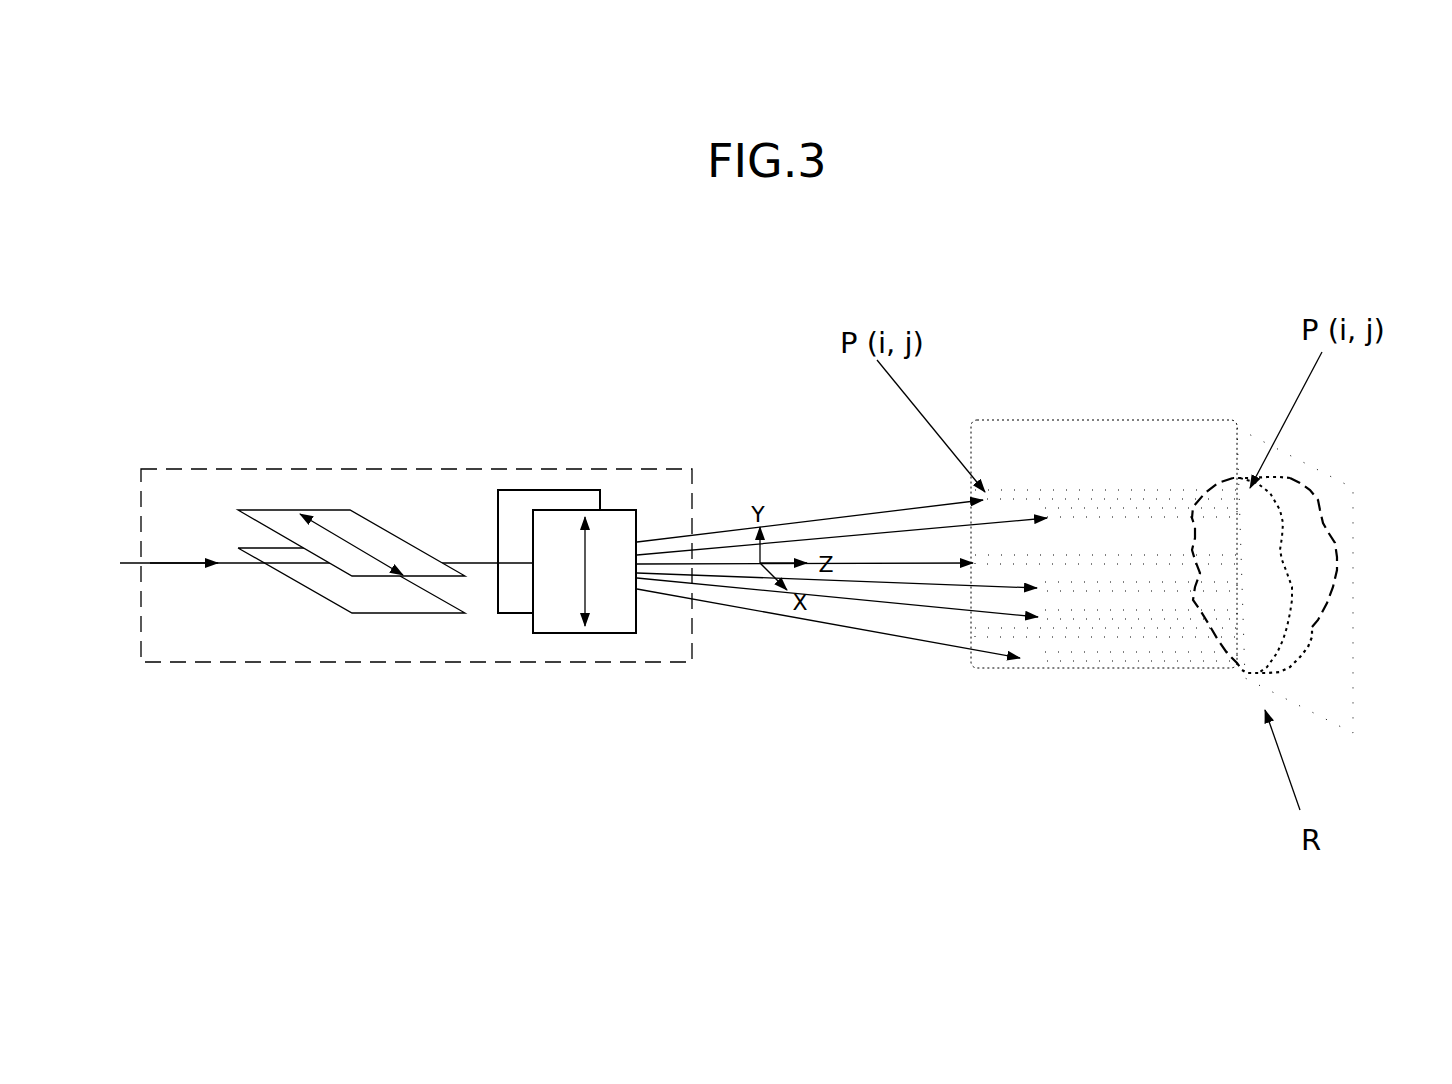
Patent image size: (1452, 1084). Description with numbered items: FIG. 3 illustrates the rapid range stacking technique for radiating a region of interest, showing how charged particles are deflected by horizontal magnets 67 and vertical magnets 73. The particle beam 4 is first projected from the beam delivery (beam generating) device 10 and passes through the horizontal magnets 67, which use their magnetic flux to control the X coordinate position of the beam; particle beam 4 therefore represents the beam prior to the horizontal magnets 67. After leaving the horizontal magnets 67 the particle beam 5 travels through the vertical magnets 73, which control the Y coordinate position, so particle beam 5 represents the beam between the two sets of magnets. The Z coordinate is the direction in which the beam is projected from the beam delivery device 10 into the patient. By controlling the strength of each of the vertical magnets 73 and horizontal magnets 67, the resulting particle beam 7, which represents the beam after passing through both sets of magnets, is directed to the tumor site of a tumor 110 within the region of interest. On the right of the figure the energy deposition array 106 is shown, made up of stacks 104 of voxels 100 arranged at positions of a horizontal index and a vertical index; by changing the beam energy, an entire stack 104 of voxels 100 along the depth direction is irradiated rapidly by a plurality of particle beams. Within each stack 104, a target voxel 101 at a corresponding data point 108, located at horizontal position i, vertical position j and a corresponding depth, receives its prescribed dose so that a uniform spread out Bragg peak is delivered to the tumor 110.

The beam delivery device 10 is at (163, 468).
The particle beam 4 is at (153, 562).
The particle beam 5 is at (462, 562).
The horizontal magnets 67 is at (343, 522).
The vertical magnets 73 is at (522, 508).
The particle beam 7 is at (907, 583).
The energy deposition array 106 is at (1003, 420).
The stack of voxels 104 is at (1103, 488).
The voxel 100 is at (1188, 492).
The target voxel 101 is at (1240, 487).
The data point 108 is at (1333, 478).
The tumor 110 is at (1295, 607).